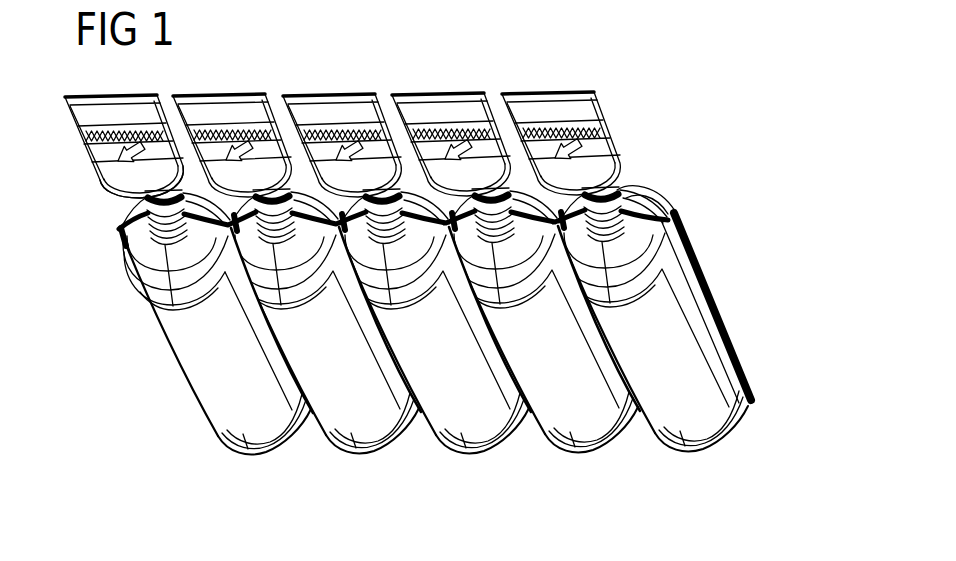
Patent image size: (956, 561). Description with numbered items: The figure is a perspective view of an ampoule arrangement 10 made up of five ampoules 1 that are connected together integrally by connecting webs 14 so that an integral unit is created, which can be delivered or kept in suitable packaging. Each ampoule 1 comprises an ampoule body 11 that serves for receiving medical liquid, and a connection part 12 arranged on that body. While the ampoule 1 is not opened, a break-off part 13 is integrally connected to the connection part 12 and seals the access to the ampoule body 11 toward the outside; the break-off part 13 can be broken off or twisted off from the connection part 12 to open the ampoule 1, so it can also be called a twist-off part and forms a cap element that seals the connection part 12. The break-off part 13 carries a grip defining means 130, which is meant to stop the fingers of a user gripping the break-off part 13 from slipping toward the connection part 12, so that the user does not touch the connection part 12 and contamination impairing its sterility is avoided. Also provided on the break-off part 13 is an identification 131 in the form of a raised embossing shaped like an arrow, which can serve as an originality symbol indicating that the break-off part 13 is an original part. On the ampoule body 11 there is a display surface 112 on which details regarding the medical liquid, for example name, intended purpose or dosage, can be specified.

The ampoule 1 is at (394, 308).
The strip of containers 10 is at (394, 308).
The ampoule body 11 is at (158, 297).
The connection part 12 is at (152, 233).
The break-off part 13 is at (110, 172).
The connecting web 14 is at (313, 430).
The display surface 112 is at (203, 352).
The grip defining means 130 is at (132, 178).
The identification 131 is at (123, 156).